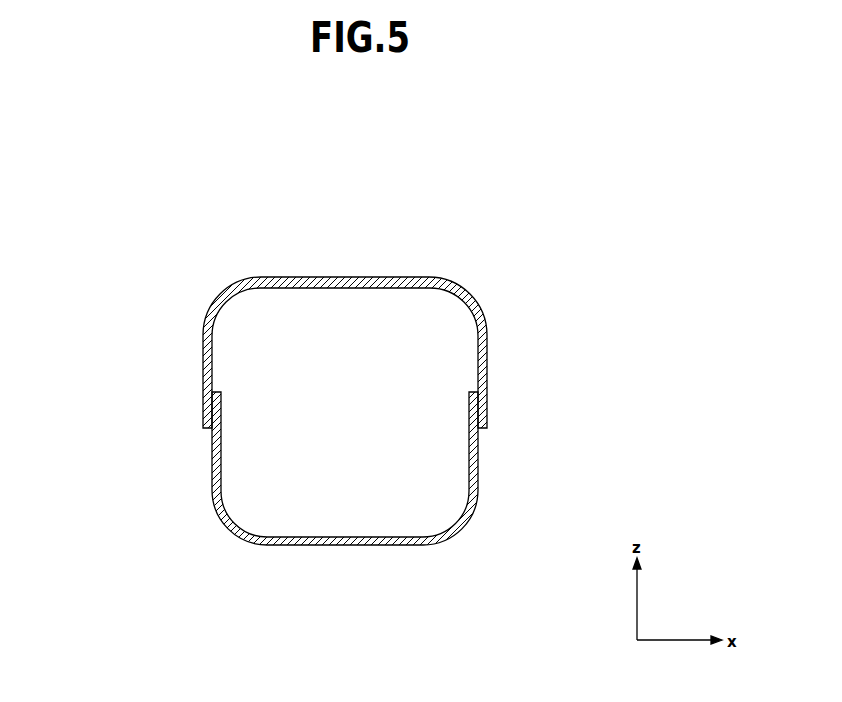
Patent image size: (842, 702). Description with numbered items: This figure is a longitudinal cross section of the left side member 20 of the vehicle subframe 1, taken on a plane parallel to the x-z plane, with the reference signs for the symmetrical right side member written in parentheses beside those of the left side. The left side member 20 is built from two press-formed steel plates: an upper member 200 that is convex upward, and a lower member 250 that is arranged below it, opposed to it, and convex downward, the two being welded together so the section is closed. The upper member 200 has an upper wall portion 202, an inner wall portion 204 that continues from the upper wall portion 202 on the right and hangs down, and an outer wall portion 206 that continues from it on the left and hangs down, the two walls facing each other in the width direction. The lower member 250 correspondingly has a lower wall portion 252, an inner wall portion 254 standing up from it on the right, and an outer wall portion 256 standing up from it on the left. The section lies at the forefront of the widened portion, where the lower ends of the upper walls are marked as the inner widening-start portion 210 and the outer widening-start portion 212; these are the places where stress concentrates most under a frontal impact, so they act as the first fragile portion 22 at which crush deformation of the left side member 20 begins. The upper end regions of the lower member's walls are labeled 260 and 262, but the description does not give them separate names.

The subframe 1 is at (470, 175).
The left side member 20 is at (385, 202).
The first fragile portion 22 is at (268, 249).
The upper member 200 is at (476, 281).
The upper wall portion 202 is at (341, 250).
The inner wall portion 204 is at (487, 355).
The outer wall portion 206 is at (203, 355).
The inner widening-start portion 210 is at (487, 380).
The outer widening-start portion 212 is at (203, 380).
The lower member 250 is at (268, 568).
The lower wall portion 252 is at (370, 546).
The inner wall portion 254 is at (478, 448).
The outer wall portion 256 is at (212, 448).
The end portion of right side wall of lid 260 is at (478, 472).
The end portion of left side wall of lid 262 is at (212, 472).